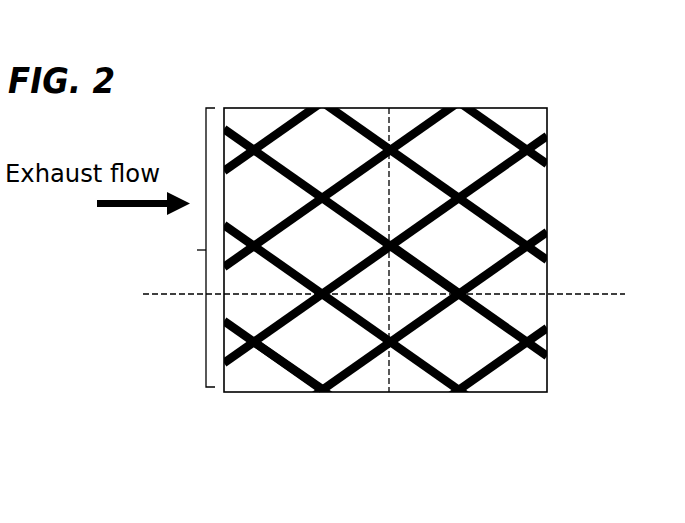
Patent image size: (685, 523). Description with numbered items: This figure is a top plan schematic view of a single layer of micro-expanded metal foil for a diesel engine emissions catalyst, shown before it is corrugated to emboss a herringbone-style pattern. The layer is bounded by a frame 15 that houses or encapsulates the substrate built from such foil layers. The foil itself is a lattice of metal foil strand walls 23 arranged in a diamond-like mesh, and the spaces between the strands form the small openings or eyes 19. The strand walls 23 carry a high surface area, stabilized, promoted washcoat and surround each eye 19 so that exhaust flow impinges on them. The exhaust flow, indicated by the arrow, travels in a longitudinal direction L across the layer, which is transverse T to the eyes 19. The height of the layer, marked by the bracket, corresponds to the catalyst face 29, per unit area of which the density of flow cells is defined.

The frame 15 is at (548, 190).
The eyes 19 is at (410, 302).
The metal foil strand walls 23 is at (275, 362).
The catalyst face 29 is at (181, 247).
The transverse direction T is at (388, 120).
The longitudinal direction L is at (362, 293).